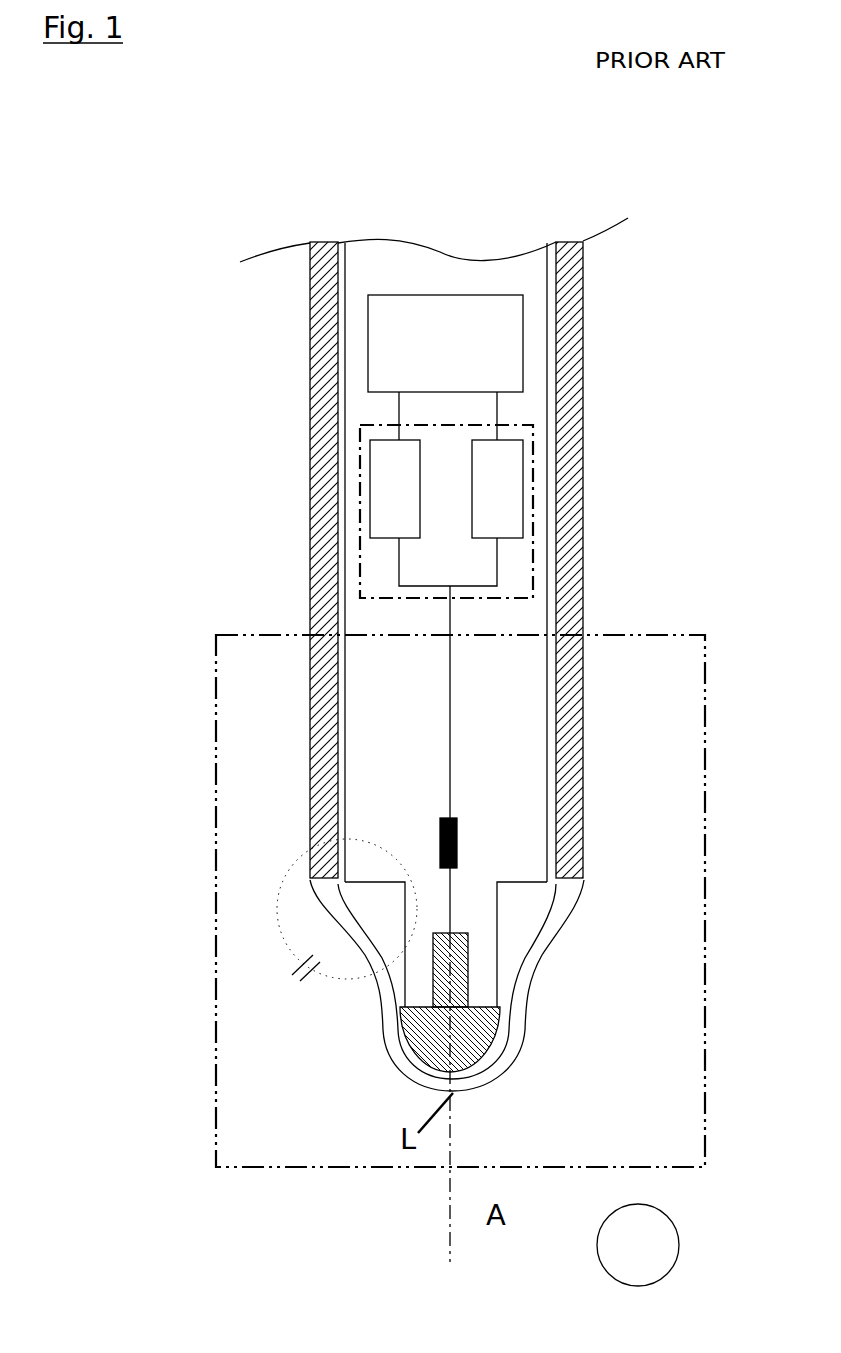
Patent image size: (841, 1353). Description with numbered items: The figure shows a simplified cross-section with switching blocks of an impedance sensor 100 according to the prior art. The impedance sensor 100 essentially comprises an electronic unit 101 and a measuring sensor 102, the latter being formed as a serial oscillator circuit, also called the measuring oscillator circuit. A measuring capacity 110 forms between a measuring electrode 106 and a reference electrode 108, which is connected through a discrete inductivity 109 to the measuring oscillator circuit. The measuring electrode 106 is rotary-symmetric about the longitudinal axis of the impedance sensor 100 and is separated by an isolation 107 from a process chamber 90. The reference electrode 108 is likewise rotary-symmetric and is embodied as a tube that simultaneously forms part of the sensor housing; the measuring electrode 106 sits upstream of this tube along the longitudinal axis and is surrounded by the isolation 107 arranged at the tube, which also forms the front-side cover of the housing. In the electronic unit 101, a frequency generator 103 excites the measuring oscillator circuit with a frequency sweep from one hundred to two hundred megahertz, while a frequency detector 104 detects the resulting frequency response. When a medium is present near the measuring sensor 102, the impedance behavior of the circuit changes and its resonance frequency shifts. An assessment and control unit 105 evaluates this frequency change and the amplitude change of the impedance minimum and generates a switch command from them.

The impedance sensor 100 is at (188, 195).
The electronic unit 101 is at (533, 558).
The measuring sensor 102 is at (358, 1145).
The frequency generator 103 is at (497, 489).
The frequency detector 104 is at (395, 489).
The assessment and control unit 105 is at (445, 367).
The measuring electrode 106 is at (487, 1055).
The isolation 107 is at (543, 925).
The reference electrode 108 is at (583, 838).
The discrete inductivity 109 is at (457, 840).
The measuring capacity 110 is at (300, 983).
The process chamber 90 is at (638, 1245).